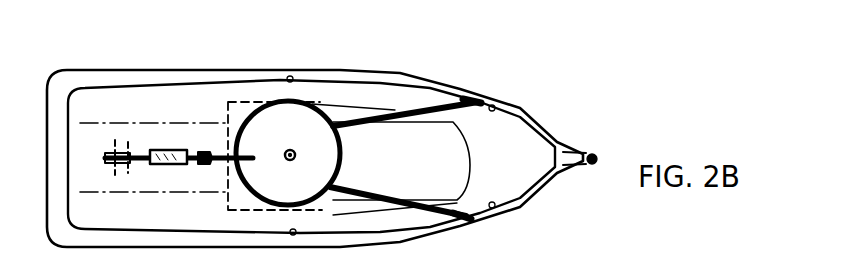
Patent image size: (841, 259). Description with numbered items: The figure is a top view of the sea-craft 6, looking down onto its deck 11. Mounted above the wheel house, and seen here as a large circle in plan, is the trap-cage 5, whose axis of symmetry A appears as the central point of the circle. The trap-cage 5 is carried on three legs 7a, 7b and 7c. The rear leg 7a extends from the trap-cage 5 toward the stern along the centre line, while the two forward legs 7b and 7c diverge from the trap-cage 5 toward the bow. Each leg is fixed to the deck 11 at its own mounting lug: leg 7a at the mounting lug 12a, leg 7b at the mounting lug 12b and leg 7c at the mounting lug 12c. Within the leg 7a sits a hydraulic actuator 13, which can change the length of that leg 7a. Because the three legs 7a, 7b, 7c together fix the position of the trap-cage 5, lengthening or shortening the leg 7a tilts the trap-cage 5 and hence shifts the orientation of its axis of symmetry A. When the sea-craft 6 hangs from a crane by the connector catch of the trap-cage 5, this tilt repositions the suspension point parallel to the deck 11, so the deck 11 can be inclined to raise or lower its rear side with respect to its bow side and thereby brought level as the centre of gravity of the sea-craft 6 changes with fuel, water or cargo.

The sea-craft 6 is at (537, 119).
The deck 11 is at (132, 107).
The mounting lug 12a is at (118, 152).
The mounting lug 12b is at (483, 220).
The mounting lug 12c is at (468, 97).
The hydraulic actuator 13 is at (165, 150).
The trap-cage 5 is at (263, 118).
The axis of symmetry A is at (293, 150).
The leg 7a is at (212, 153).
The leg 7b is at (363, 188).
The leg 7c is at (384, 110).